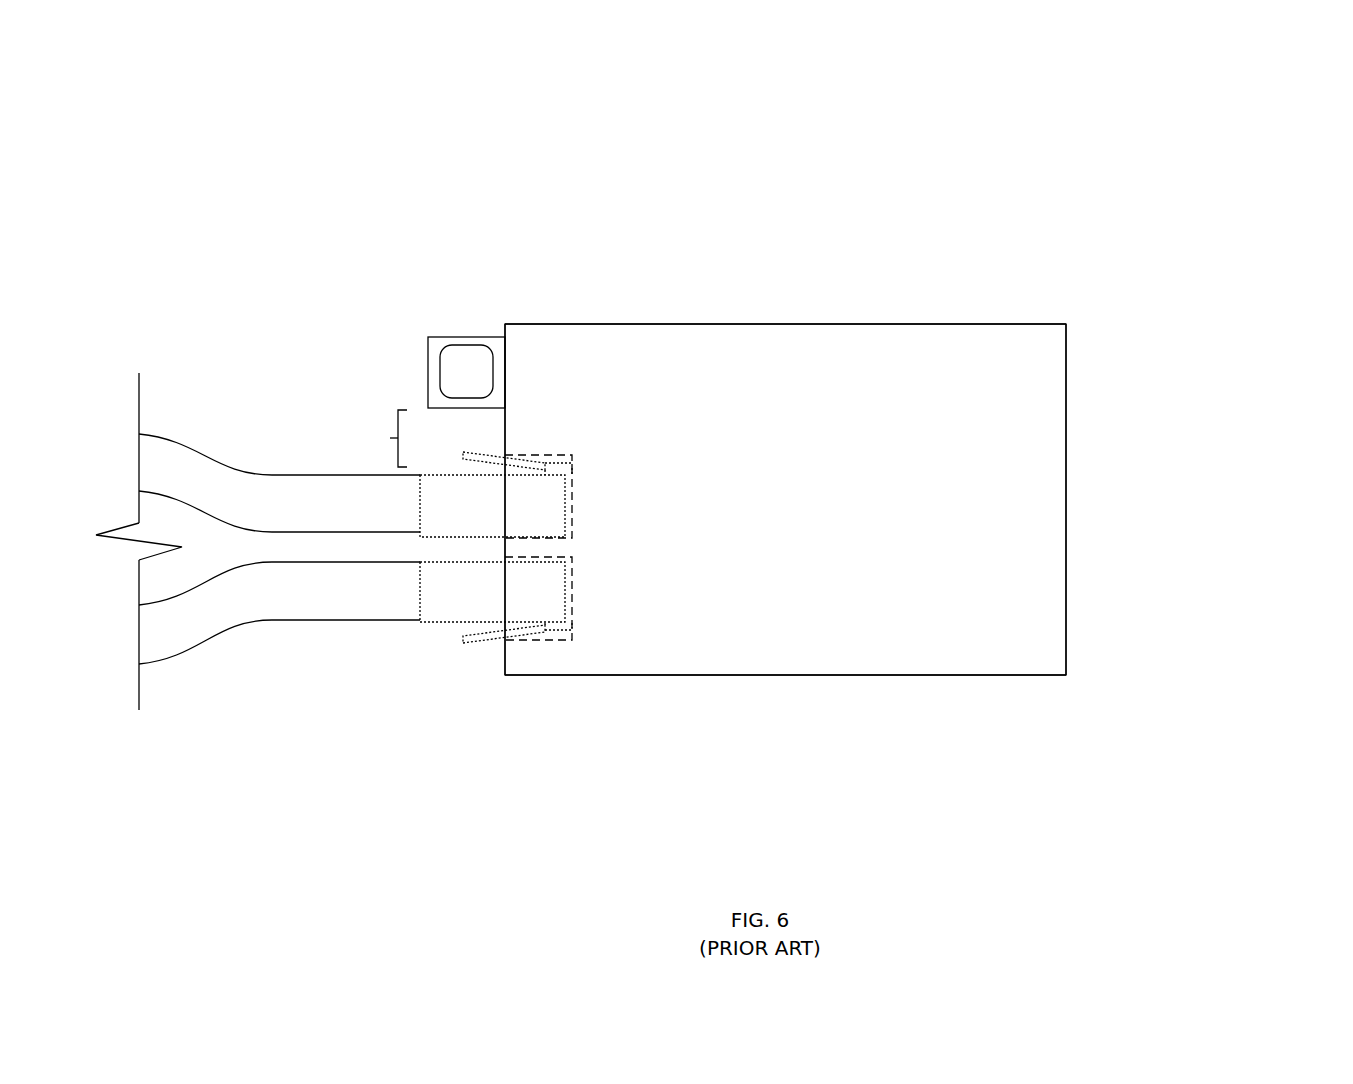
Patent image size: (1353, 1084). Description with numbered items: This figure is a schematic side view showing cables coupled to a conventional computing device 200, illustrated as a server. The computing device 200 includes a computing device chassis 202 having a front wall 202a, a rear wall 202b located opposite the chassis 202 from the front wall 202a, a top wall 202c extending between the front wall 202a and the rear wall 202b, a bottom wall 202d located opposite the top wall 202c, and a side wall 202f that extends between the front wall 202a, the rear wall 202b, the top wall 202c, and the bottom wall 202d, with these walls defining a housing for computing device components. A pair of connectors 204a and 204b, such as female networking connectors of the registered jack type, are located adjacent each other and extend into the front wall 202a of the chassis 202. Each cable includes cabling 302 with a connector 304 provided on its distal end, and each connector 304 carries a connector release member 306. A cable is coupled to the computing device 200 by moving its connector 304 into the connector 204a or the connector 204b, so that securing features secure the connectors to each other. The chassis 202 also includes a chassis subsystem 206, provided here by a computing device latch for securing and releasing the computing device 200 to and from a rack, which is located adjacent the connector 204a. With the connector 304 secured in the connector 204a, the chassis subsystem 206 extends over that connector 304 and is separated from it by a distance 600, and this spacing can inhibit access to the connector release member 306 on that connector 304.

The conventional computing device 200 is at (1207, 116).
The computing device chassis 202 is at (1066, 324).
The front wall 202a is at (505, 652).
The rear wall 202b is at (1066, 500).
The top wall 202c is at (787, 323).
The bottom wall 202d is at (785, 675).
The side wall 202f is at (798, 512).
The connector 204a is at (573, 495).
The connector 204b is at (573, 600).
The chassis subsystem 206 is at (428, 373).
The cabling 302 is at (180, 441).
The connector 304 is at (565, 533).
The connector release member 306 is at (497, 455).
The distance 600 is at (377, 438).